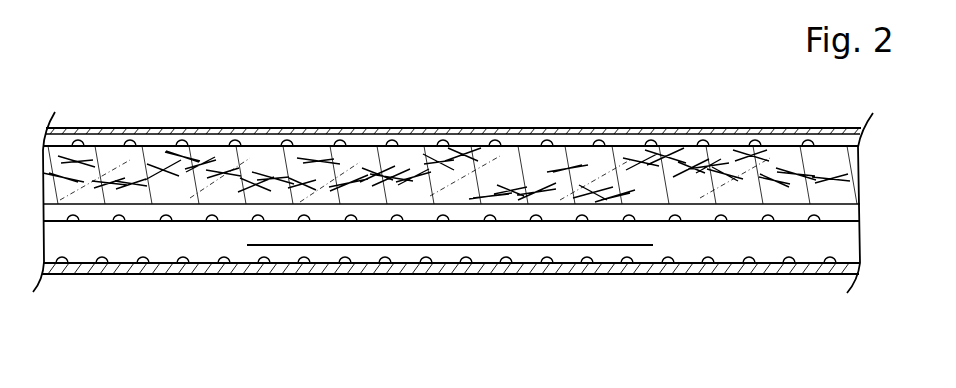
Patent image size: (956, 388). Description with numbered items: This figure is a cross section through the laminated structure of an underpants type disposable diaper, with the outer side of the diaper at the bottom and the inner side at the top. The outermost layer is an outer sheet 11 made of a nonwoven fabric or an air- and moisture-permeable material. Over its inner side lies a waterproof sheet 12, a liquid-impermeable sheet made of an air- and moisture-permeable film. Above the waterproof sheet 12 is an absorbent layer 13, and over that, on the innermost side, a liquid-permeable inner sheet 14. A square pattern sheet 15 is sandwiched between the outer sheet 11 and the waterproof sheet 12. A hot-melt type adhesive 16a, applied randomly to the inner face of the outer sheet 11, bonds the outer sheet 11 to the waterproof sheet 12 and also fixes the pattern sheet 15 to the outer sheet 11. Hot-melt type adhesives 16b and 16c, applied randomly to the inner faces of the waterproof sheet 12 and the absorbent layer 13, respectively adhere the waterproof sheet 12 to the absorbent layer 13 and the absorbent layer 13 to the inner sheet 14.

The outer sheet 11 is at (438, 268).
The waterproof sheet 12 is at (189, 223).
The absorbent layer 13 is at (260, 160).
The inner sheet 14 is at (420, 129).
The pattern sheet 15 is at (283, 246).
The hot-melt type adhesive 16a is at (672, 259).
The hot-melt type adhesive 16b is at (815, 216).
The hot-melt type adhesive 16c is at (601, 139).